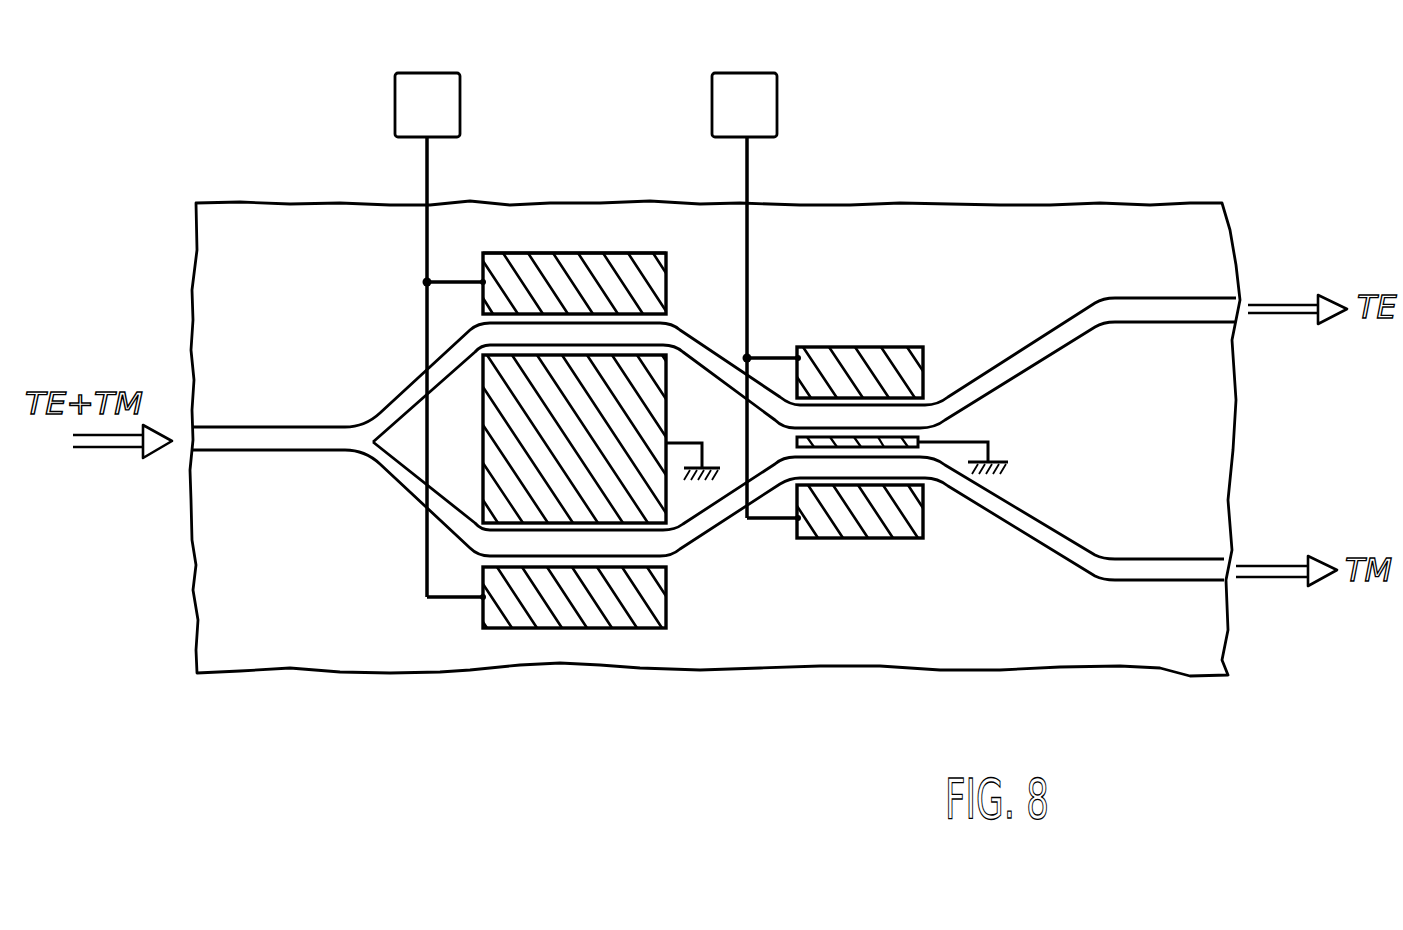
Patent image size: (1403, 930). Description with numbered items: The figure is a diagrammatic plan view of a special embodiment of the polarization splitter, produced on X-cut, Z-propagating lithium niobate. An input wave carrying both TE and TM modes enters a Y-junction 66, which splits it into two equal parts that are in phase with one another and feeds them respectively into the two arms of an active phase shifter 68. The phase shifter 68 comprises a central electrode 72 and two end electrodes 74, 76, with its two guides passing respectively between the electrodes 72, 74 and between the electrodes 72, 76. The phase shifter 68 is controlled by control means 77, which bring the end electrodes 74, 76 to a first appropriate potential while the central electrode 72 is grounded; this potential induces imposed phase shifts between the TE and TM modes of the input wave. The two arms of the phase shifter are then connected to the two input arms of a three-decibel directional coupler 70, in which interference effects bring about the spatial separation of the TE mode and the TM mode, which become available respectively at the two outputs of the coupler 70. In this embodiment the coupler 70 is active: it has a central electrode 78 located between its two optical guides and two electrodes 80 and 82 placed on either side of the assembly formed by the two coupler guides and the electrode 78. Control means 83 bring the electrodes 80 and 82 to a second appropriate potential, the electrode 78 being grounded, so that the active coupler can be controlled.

The Y-junction 66 is at (362, 384).
The active phase shifter 68 is at (624, 218).
The 3 dB directional coupler 70 is at (845, 272).
The central electrode 72 is at (640, 507).
The end electrode 74 is at (521, 282).
The end electrode 76 is at (532, 608).
The control means 77 is at (406, 102).
The central electrode 78 is at (963, 413).
The electrode 80 is at (880, 346).
The electrode 82 is at (880, 540).
The control means 83 is at (766, 108).